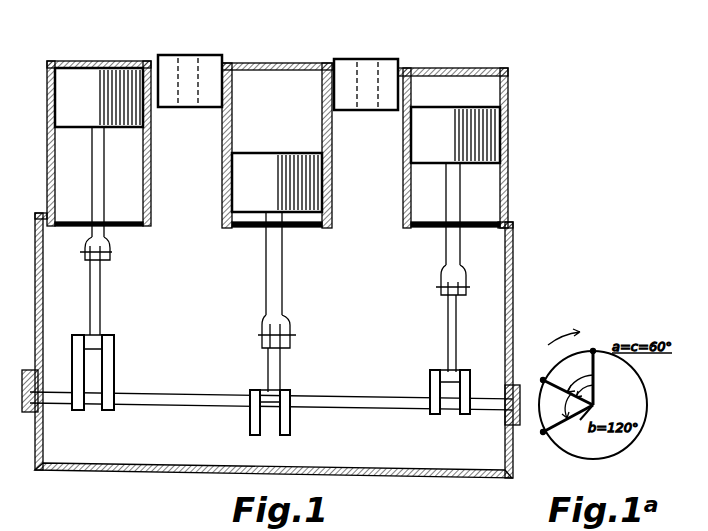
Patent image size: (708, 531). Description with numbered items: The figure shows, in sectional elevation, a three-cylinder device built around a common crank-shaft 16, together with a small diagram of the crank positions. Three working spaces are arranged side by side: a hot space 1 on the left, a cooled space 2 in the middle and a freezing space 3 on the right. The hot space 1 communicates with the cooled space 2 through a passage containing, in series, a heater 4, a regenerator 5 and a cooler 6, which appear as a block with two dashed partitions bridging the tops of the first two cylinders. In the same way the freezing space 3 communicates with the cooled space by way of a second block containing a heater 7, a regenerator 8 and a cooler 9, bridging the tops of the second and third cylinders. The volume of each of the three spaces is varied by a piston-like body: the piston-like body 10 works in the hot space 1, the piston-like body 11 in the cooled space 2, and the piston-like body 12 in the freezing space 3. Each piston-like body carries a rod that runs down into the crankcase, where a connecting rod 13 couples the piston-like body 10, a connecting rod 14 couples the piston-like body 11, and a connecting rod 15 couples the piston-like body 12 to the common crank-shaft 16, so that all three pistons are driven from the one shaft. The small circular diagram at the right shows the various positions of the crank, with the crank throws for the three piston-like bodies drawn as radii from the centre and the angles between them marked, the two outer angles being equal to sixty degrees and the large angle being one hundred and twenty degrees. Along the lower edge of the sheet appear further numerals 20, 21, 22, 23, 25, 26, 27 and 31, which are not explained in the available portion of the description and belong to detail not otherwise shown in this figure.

In FIG. 1, the hot space 1 is at (100, 68).
In FIG. 1, the cooled space 2 is at (287, 76).
In FIG. 1, the freezing space 3 is at (462, 80).
In FIG. 1, the heater 4 is at (171, 62).
In FIG. 1, the regenerator 5 is at (190, 62).
In FIG. 1, the cooler 6 is at (212, 64).
In FIG. 1, the heater 7 is at (390, 67).
In FIG. 1, the regenerator 8 is at (370, 67).
In FIG. 1, the cooler 9 is at (346, 67).
In FIG. 1, the piston-like body 10 is at (65, 100).
In FIG. 1A, the piston-like body 10 is at (592, 369).
In FIG. 1, the piston-like body 11 is at (240, 190).
In FIG. 1A, the piston-like body 11 is at (556, 424).
In FIG. 1, the piston-like body 12 is at (496, 135).
In FIG. 1A, the piston-like body 12 is at (558, 386).
In FIG. 1, the connecting rod 13 is at (94, 289).
In FIG. 1, the connecting rod 14 is at (268, 281).
In FIG. 1, the connecting rod 15 is at (450, 314).
In FIG. 1, the crank-shaft 16 is at (372, 404).
In FIG. 1, the element 20 is at (179, 521).
In FIG. 1, the element 21 is at (395, 523).
In FIG. 1, the element 22 is at (511, 523).
In FIG. 1, the element 23 is at (139, 521).
In FIG. 1, the element 25 is at (476, 523).
In FIG. 1, the element 26 is at (208, 521).
In FIG. 1, the element 27 is at (359, 523).
In FIG. 1, the element 31 is at (436, 523).